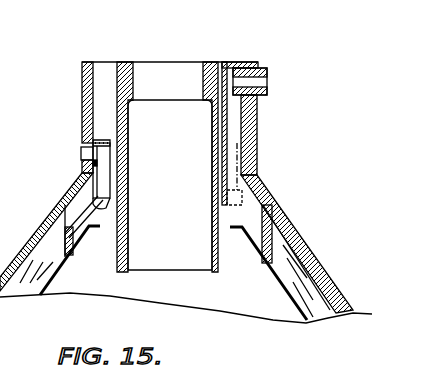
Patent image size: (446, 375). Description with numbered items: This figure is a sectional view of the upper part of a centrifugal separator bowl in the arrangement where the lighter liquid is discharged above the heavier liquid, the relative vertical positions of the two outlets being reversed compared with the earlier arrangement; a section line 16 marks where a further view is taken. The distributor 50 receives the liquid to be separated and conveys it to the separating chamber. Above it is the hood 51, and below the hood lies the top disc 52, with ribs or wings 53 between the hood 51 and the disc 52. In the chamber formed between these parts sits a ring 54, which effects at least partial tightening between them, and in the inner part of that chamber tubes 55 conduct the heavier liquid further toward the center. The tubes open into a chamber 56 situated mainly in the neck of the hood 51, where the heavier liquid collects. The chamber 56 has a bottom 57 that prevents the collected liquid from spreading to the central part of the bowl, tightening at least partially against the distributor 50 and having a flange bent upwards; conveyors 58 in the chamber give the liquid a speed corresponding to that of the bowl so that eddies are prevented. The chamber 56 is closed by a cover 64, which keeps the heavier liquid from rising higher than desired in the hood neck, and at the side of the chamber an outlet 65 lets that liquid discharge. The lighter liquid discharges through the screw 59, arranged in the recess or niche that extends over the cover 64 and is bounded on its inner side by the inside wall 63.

The section line 16- 16 is at (75, 78).
The distributor 50 is at (218, 62).
The hood 51 is at (258, 173).
The top disc 52 is at (297, 300).
The ribs or wings 53 is at (287, 277).
The ring 54 is at (70, 253).
The tubes 55 is at (80, 208).
The chamber 56 is at (90, 170).
The bottom 57 is at (106, 210).
The conveyors 58 is at (104, 176).
The screw 59 is at (266, 69).
The inside wall 63 is at (223, 121).
The cover 64 is at (97, 143).
The outlet 65 is at (85, 152).